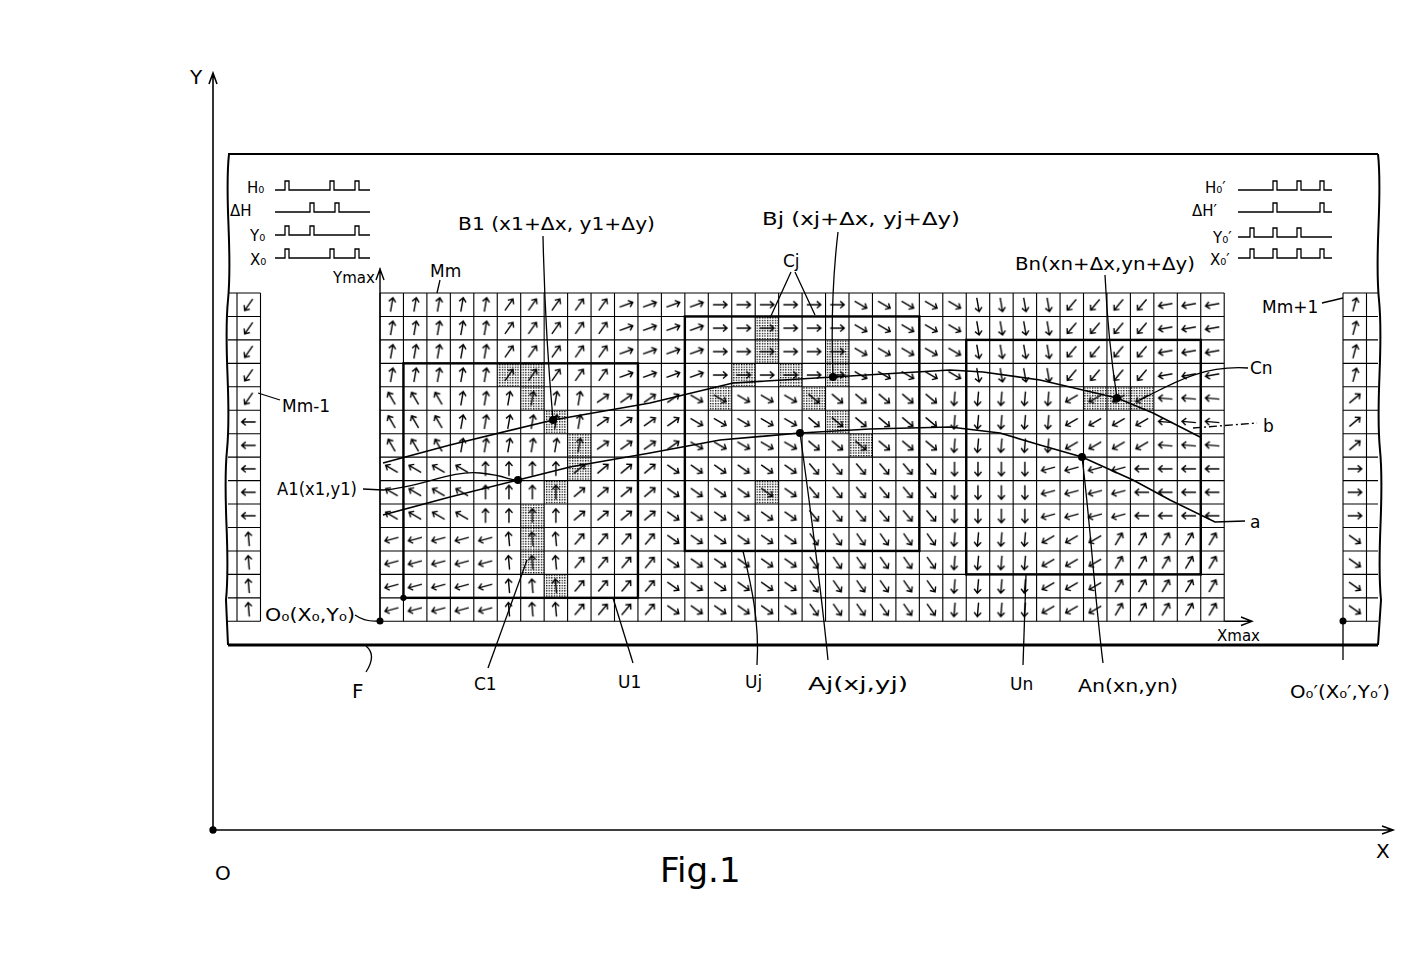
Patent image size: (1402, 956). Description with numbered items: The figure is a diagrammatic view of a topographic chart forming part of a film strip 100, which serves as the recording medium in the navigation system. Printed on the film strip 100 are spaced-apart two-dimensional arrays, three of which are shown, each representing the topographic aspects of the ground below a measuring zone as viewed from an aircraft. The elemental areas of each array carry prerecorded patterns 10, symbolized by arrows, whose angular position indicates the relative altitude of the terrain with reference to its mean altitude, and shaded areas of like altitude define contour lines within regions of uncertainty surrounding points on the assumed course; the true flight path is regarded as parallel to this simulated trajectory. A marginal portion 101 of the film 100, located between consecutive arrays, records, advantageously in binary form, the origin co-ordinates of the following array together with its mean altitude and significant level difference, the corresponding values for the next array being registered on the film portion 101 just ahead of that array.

The picture element (grid cell) 10 is at (690, 322).
The film strip 100 is at (572, 659).
The marginal portion of the film 101 is at (416, 166).